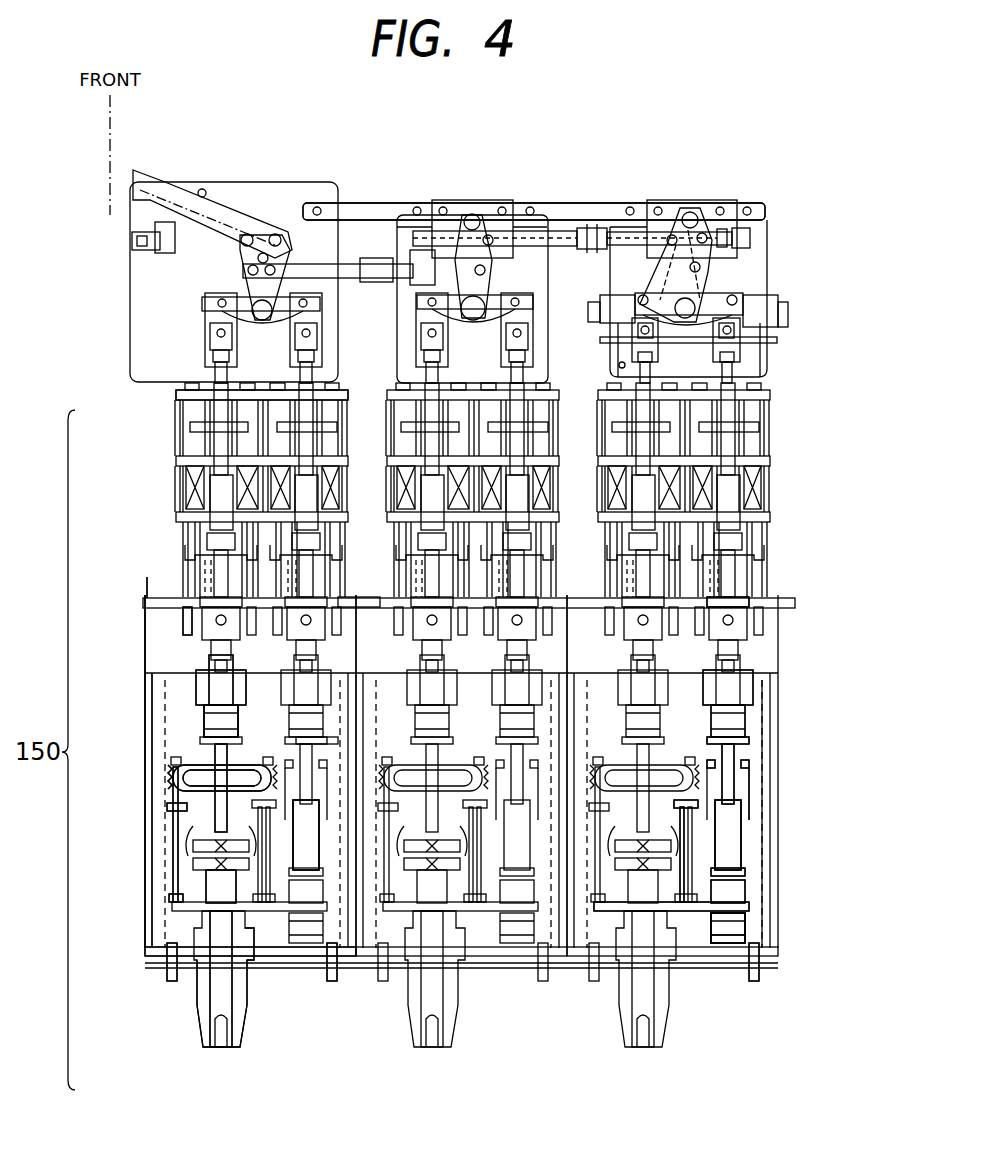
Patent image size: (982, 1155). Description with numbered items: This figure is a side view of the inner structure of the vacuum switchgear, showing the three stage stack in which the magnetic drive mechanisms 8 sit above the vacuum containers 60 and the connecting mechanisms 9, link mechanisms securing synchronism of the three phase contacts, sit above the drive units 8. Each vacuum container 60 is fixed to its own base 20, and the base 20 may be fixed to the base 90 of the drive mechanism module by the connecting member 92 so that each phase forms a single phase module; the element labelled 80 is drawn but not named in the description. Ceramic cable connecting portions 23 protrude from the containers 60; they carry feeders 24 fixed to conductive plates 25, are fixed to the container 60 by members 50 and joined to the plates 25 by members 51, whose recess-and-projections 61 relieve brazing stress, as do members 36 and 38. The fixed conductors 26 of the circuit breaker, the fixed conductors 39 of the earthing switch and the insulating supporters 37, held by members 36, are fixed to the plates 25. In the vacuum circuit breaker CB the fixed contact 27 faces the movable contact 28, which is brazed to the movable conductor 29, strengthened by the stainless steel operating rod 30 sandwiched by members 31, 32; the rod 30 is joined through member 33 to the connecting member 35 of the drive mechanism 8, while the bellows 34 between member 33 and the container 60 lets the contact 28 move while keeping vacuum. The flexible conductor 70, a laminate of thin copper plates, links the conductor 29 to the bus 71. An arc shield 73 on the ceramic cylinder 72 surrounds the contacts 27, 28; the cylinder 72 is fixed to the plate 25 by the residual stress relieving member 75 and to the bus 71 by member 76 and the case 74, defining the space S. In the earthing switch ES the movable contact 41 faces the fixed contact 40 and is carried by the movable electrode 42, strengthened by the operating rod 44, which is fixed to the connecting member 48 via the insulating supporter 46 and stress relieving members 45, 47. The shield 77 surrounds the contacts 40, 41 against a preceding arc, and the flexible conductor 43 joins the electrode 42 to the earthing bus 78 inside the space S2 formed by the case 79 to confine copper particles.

The magnetic drive mechanism 8 is at (178, 428).
The connecting mechanism 9 is at (750, 200).
The base 20 is at (172, 964).
The cable connecting portion 23 is at (200, 1025).
The feeder 24 is at (233, 1005).
The conductive plate 25 is at (168, 940).
The fixed conductor 26 is at (210, 890).
The fixed contact 27 is at (195, 820).
The movable contact 28 is at (200, 793).
The movable conductor 29 is at (210, 777).
The operating rod 30 is at (212, 715).
The brazing stress alleviating member 31 is at (200, 700).
The insulating supporter 32 is at (185, 640).
The connecting member 33 is at (165, 601).
The bellows 34 is at (203, 700).
The connecting member 35 is at (242, 657).
The fixing member 36 is at (746, 948).
The insulating supporter 37 is at (748, 932).
The brazed member 38 is at (750, 914).
The fixed conductor 39 is at (744, 892).
The fixed contact 40 is at (735, 878).
The movable contact 41 is at (742, 862).
The movable electrode 42 is at (742, 793).
The flexible conductor 43 is at (742, 760).
The operating rod 44 is at (735, 812).
The residual stress relieving member 45 is at (747, 735).
The insulating supporter 46 is at (737, 717).
The residual stress relieving member 47 is at (727, 692).
The connecting member 48 is at (727, 592).
The fixing member 50 is at (188, 950).
The connecting member 51 is at (258, 930).
The vacuum container 60 is at (345, 962).
The recess-and-projections 61 is at (738, 950).
The flexible conductor 70 is at (200, 767).
The bus 71 is at (238, 770).
The ceramic cylinder 72 is at (170, 872).
The arc shield 73 is at (178, 848).
The case 74 is at (295, 775).
The residual stress relieving member 75 is at (175, 905).
The residual stress relieving member 76 is at (320, 805).
The shield 77 is at (762, 900).
The earthing bus 78 is at (717, 762).
The case 79 is at (707, 807).
The support rod 80 is at (703, 813).
The base 90 is at (252, 597).
The connecting member 92 is at (150, 652).
The space S is at (312, 858).
The space S2 is at (715, 878).
The earthing switch ES is at (723, 945).
The vacuum circuit breaker CB is at (620, 893).